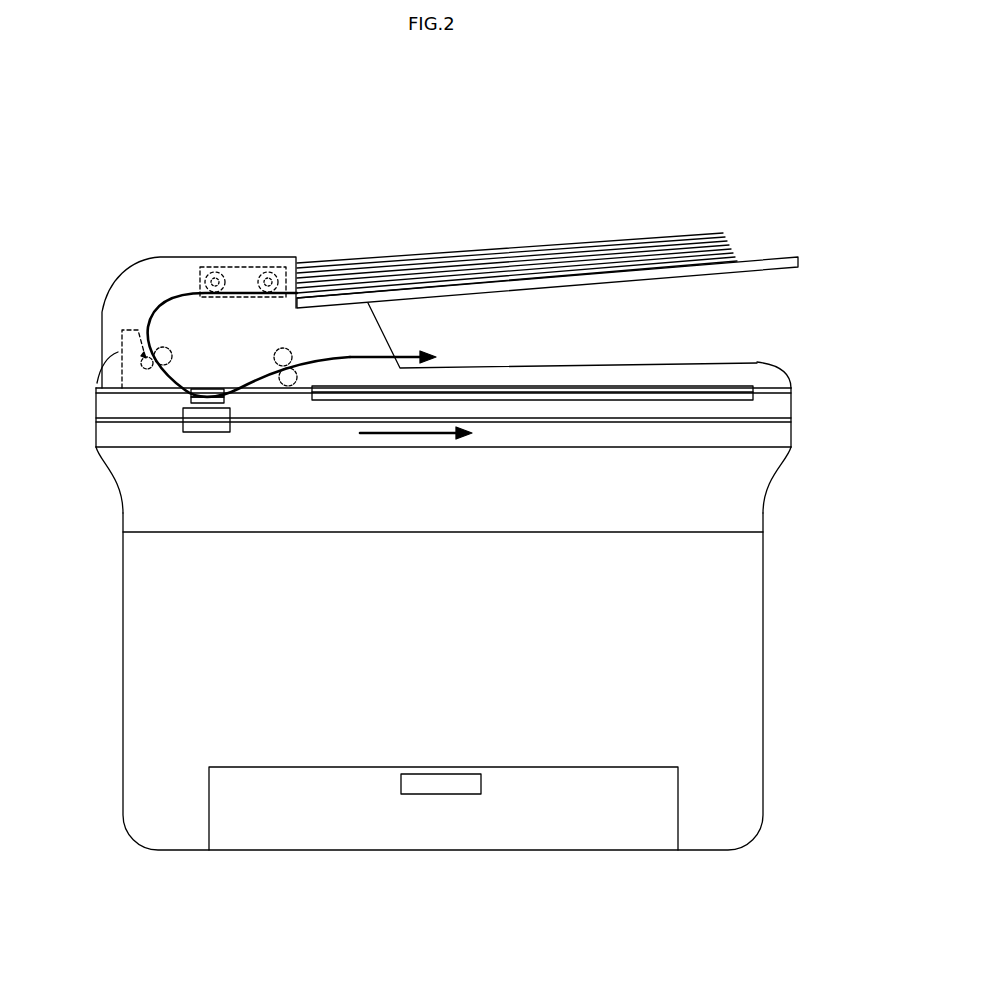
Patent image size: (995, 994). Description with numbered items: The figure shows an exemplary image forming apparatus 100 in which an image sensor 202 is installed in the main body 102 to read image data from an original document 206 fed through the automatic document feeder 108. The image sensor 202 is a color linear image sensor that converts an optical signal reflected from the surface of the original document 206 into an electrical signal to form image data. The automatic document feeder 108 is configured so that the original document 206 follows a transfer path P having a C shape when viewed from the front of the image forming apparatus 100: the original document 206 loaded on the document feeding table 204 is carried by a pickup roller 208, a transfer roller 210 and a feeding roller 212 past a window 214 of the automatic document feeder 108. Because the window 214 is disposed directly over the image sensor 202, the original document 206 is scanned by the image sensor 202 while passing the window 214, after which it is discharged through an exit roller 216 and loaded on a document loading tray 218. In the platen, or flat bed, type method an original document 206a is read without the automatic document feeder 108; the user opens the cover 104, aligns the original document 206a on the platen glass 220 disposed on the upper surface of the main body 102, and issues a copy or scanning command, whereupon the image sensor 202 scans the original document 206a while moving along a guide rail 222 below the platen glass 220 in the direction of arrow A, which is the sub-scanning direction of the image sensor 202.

The image forming apparatus 100 is at (446, 135).
The main body 102 is at (765, 639).
The cover 104 is at (763, 366).
The automatic document feeder 108 is at (299, 258).
The image sensor 202 is at (210, 420).
The document feeding table 204 is at (735, 258).
The original document 206 is at (541, 247).
The original document 206a is at (719, 387).
The pickup roller 208 is at (258, 272).
The transfer roller 210 is at (204, 272).
The feeding roller 212 is at (147, 318).
The window 214 is at (190, 400).
The exit roller 216 is at (273, 380).
The document loading tray 218 is at (478, 329).
The platen glass 220 is at (745, 397).
The guide rail 222 is at (574, 420).
The transfer path P is at (393, 349).
The arrow A is at (418, 432).